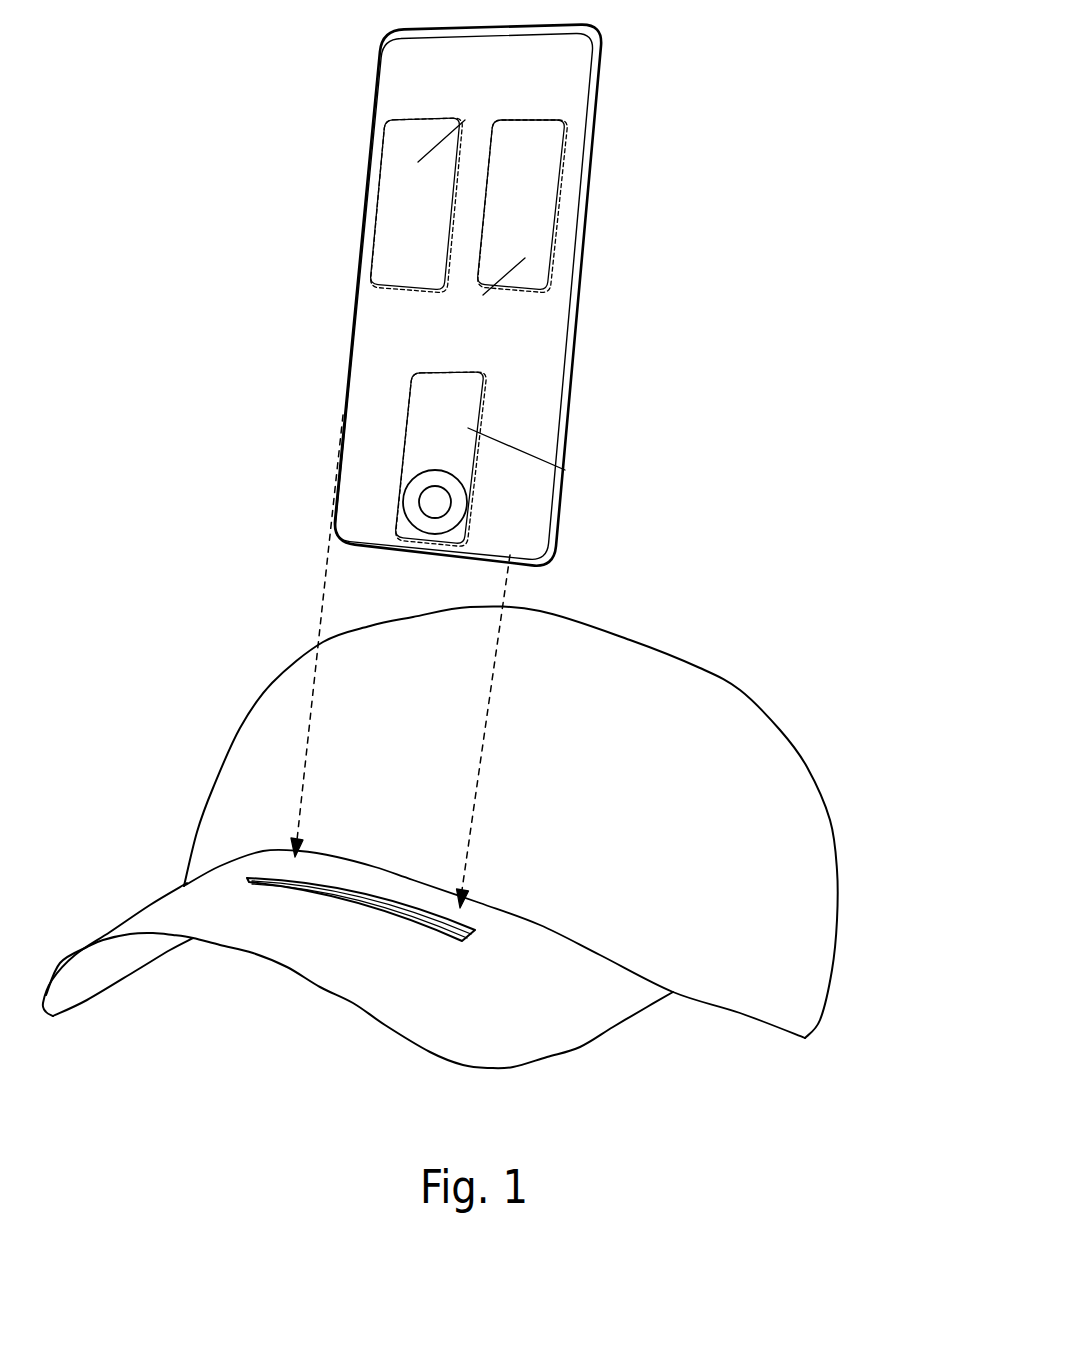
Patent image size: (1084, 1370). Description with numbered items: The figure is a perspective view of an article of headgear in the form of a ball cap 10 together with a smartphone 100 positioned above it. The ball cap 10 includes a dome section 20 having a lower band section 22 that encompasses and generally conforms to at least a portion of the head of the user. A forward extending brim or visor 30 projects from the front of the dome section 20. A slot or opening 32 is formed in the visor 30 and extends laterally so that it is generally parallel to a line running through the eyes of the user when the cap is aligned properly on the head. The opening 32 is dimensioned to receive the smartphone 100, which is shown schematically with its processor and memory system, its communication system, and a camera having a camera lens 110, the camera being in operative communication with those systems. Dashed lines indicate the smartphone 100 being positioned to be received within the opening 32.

The ball cap 10 is at (502, 852).
The dome section 20 is at (544, 852).
The band section 22 is at (803, 1038).
The visor 30 is at (525, 1037).
The opening 32 is at (260, 877).
The smartphone 100 is at (542, 295).
The camera lens 110 is at (408, 472).